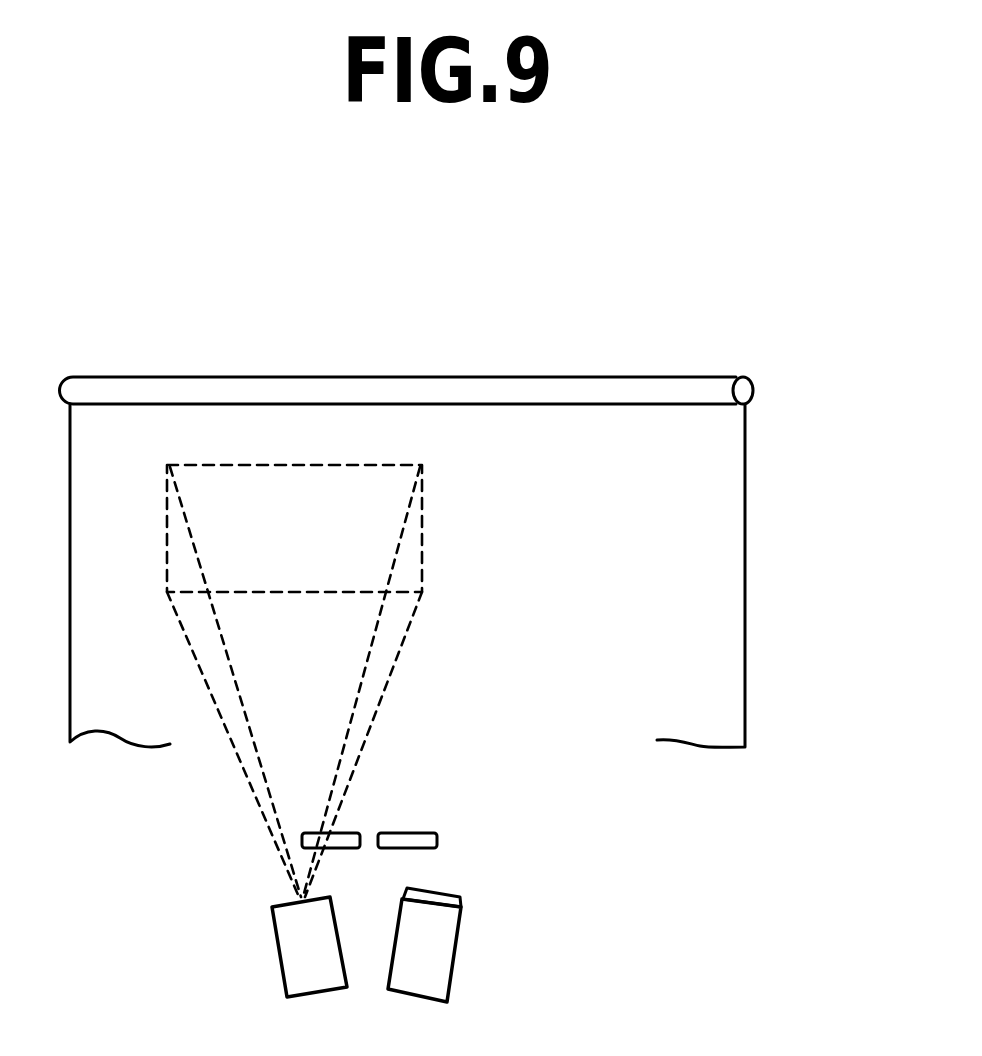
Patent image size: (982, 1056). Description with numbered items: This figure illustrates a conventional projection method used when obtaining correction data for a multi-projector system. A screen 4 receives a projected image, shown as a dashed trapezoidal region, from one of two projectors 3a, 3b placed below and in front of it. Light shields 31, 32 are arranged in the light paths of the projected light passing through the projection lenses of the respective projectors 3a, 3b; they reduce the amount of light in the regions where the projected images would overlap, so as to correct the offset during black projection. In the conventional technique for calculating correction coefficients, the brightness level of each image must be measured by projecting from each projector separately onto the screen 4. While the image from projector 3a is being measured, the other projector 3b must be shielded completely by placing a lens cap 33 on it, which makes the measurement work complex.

The screen 4 is at (708, 545).
The projector 3a is at (278, 955).
The projector 3b is at (457, 972).
The light shield 31 is at (302, 843).
The light shield 32 is at (437, 843).
The lens cap 33 is at (460, 897).